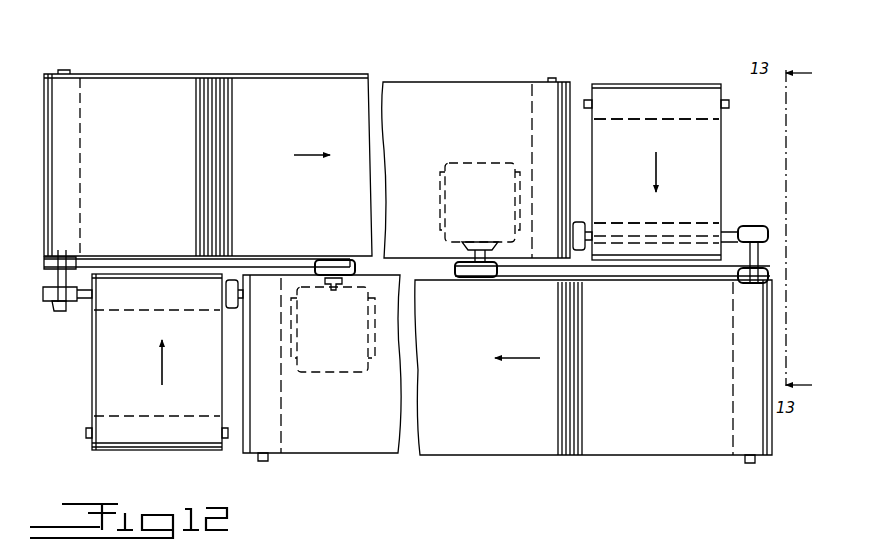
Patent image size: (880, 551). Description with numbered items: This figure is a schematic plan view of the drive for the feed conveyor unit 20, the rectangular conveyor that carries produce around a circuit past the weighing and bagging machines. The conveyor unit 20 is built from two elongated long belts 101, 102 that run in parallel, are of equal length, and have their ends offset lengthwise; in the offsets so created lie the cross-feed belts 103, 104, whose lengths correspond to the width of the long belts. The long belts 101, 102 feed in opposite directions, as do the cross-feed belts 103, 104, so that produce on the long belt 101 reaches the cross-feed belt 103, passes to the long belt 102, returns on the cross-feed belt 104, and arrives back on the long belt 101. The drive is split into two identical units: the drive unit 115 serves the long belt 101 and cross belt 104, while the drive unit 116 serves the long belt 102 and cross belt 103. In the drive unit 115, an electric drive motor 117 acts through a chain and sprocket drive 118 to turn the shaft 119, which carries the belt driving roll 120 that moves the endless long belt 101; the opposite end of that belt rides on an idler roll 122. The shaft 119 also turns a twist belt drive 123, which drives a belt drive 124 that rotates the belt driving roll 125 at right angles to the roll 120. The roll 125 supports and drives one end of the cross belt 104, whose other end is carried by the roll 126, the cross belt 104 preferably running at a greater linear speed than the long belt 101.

The feed conveyor unit 20 is at (328, 66).
The long belt 101 is at (550, 447).
The long belt 102 is at (137, 86).
The cross-feed belt 103 is at (97, 353).
The cross-feed belt 104 is at (614, 96).
The drive unit 115 is at (449, 267).
The drive unit 116 is at (308, 250).
The electric drive motor 117 is at (480, 165).
The chain and sprocket drive 118 is at (482, 278).
The shaft 119 is at (752, 258).
The belt driving roll 120 is at (730, 433).
The idler roll 122 is at (281, 430).
The twist belt drive 123 is at (763, 241).
The belt drive 124 is at (578, 223).
The belt driving roll 125 is at (706, 222).
The roll 126 is at (705, 120).